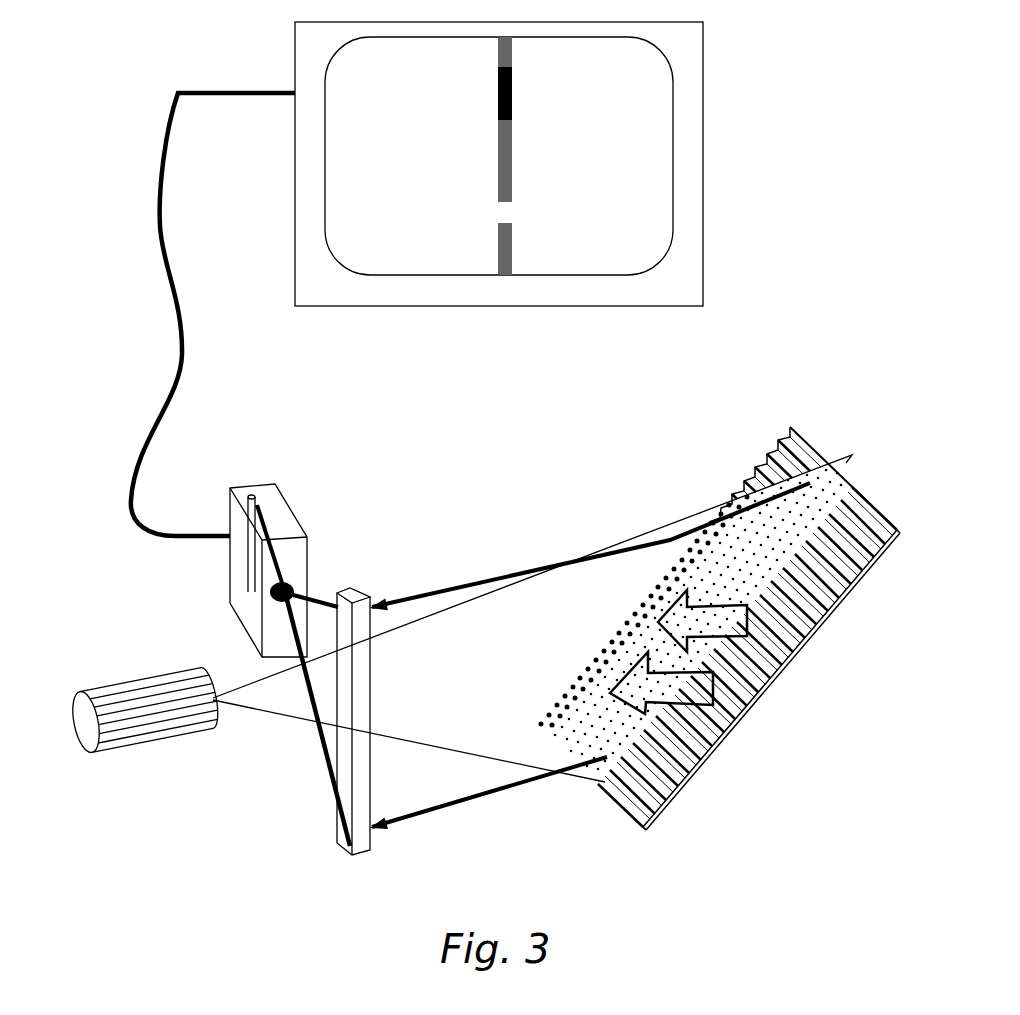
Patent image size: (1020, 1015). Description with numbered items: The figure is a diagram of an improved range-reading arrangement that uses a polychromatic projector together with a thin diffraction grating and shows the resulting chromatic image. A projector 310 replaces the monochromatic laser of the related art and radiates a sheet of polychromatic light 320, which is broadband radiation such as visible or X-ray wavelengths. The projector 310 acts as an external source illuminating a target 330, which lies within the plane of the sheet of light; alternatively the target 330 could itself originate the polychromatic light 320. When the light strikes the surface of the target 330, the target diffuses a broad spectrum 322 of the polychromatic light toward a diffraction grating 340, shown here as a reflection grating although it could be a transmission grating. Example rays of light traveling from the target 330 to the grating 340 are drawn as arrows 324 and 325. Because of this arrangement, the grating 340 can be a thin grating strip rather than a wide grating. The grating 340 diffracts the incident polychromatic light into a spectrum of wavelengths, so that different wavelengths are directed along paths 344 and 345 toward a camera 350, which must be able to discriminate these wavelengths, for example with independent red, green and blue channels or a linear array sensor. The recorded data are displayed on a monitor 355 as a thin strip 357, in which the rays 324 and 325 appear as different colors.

The projector 310 is at (83, 692).
The polychromatic light 320 is at (637, 537).
The broad spectrum 322 is at (826, 617).
The ray 324 is at (498, 257).
The ray 325 is at (512, 80).
The target 330 is at (671, 817).
The diffraction grating 340 is at (336, 820).
The path 344 is at (318, 740).
The path 345 is at (318, 607).
The camera 350 is at (307, 577).
The monitor 355 is at (450, 307).
The thin strip 357 is at (512, 157).